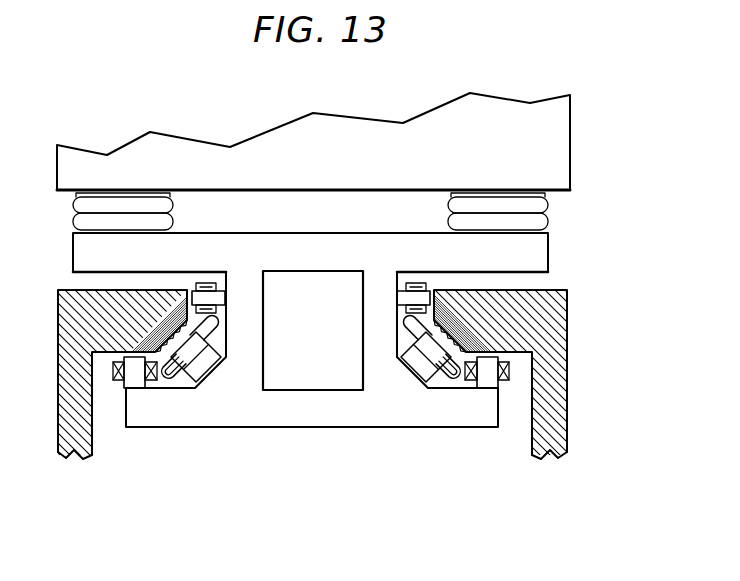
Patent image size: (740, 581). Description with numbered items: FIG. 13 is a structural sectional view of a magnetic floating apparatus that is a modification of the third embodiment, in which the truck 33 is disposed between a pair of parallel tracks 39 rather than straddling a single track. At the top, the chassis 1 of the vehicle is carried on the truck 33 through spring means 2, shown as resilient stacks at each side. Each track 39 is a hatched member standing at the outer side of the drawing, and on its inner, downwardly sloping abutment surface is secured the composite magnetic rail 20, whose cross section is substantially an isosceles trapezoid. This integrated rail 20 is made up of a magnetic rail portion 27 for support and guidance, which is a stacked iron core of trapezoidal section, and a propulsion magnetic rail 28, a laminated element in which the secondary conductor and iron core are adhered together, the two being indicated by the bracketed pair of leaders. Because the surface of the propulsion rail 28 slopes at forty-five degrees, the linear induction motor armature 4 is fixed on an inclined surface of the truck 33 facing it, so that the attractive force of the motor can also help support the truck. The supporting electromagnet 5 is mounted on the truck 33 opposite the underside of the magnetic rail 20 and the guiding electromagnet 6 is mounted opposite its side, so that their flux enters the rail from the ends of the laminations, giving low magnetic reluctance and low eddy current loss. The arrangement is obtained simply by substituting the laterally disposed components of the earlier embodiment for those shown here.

The chassis 1 is at (560, 135).
The spring means 2 is at (543, 220).
The truck 33 is at (543, 256).
The magnetic rail 20 is at (392, 333).
The propulsion magnetic rail 28 is at (452, 320).
The magnetic rail portion 27 is at (473, 337).
The guiding electromagnet 6 is at (396, 297).
The linear induction motor armature 4 is at (414, 368).
The supporting electromagnet 5 is at (484, 388).
The track 39 is at (553, 436).